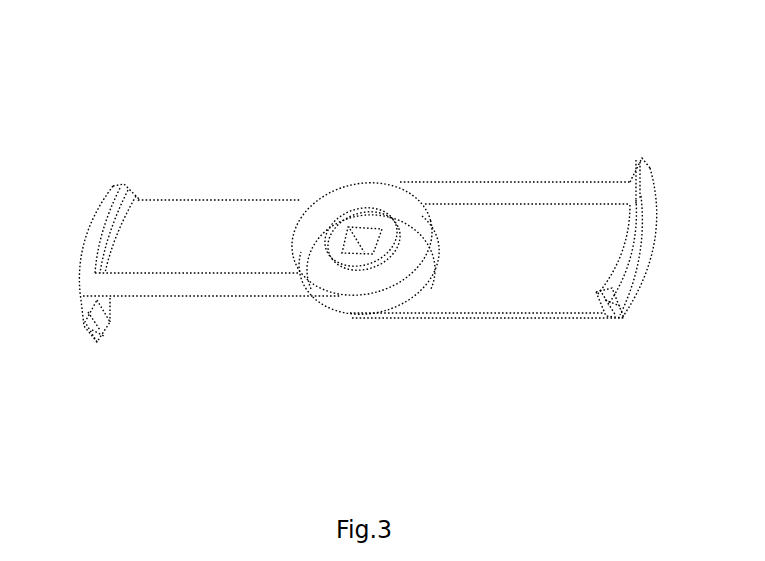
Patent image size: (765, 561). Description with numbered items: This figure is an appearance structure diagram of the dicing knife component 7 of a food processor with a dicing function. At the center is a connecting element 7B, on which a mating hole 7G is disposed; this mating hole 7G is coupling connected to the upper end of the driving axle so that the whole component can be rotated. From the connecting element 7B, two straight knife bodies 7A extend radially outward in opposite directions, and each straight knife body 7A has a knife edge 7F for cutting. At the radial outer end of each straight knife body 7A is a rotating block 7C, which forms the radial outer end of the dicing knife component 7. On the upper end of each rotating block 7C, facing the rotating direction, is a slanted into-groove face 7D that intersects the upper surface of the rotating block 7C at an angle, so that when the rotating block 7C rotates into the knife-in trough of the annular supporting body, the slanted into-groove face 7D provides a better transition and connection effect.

The dicing knife component 7 is at (190, 135).
The straight knife body 7A is at (243, 228).
The connecting element 7B is at (402, 243).
The rotating block 7C is at (113, 185).
The slanted into-groove face 7D is at (636, 160).
The knife edge 7F is at (484, 193).
The mating hole 7G is at (357, 240).